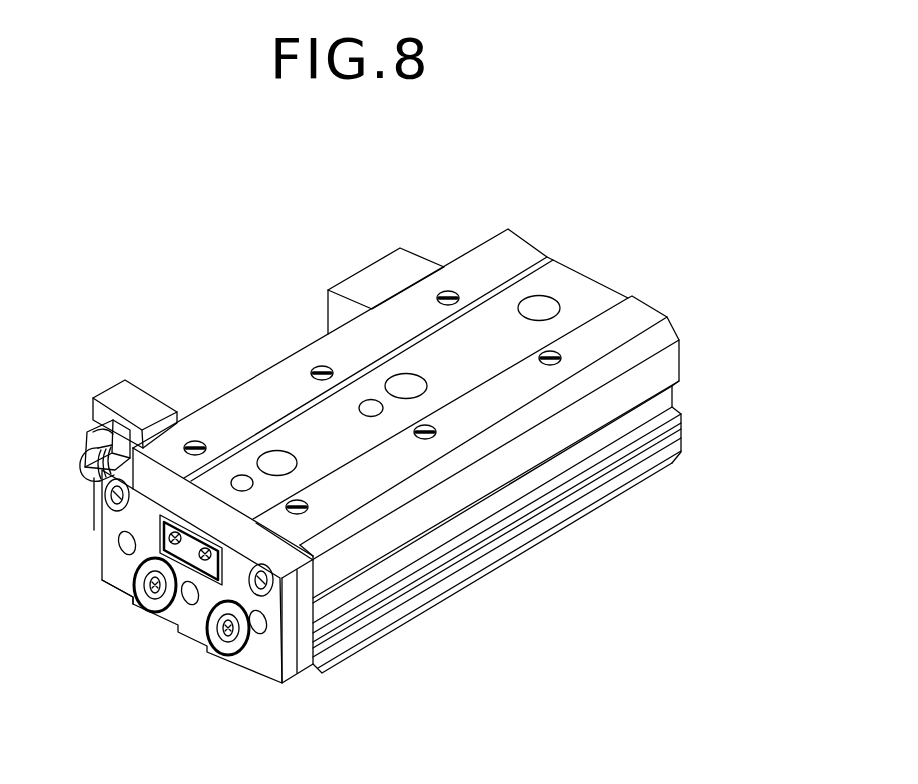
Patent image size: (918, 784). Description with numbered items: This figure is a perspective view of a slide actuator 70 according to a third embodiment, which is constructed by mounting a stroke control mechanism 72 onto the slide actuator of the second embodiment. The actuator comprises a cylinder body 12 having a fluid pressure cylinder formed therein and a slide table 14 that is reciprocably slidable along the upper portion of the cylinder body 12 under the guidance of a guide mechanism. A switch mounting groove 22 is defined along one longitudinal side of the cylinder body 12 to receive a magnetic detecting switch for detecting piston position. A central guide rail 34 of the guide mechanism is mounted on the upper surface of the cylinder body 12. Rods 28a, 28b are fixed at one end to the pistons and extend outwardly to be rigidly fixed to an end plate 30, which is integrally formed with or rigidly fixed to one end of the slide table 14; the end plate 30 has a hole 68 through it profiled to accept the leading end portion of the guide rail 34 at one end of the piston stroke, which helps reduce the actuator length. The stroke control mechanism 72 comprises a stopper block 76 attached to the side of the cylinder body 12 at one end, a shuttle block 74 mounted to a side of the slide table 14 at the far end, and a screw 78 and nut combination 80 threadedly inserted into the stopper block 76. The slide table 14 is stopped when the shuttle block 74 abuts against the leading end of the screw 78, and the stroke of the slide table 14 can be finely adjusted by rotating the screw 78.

The cylinder body 12 is at (523, 500).
The slide table 14 is at (278, 383).
The switch mounting groove 22 is at (477, 548).
The rod 28a is at (153, 608).
The rod 28b is at (233, 652).
The end plate 30 is at (156, 594).
The central guide rail 34 is at (192, 550).
The hole 68 is at (103, 577).
The slide actuator 70 is at (236, 364).
The stroke control mechanism 72 is at (268, 328).
The shuttle block 74 is at (368, 285).
The stopper block 76 is at (140, 403).
The screw 78 is at (90, 475).
The nut combination 80 is at (107, 427).